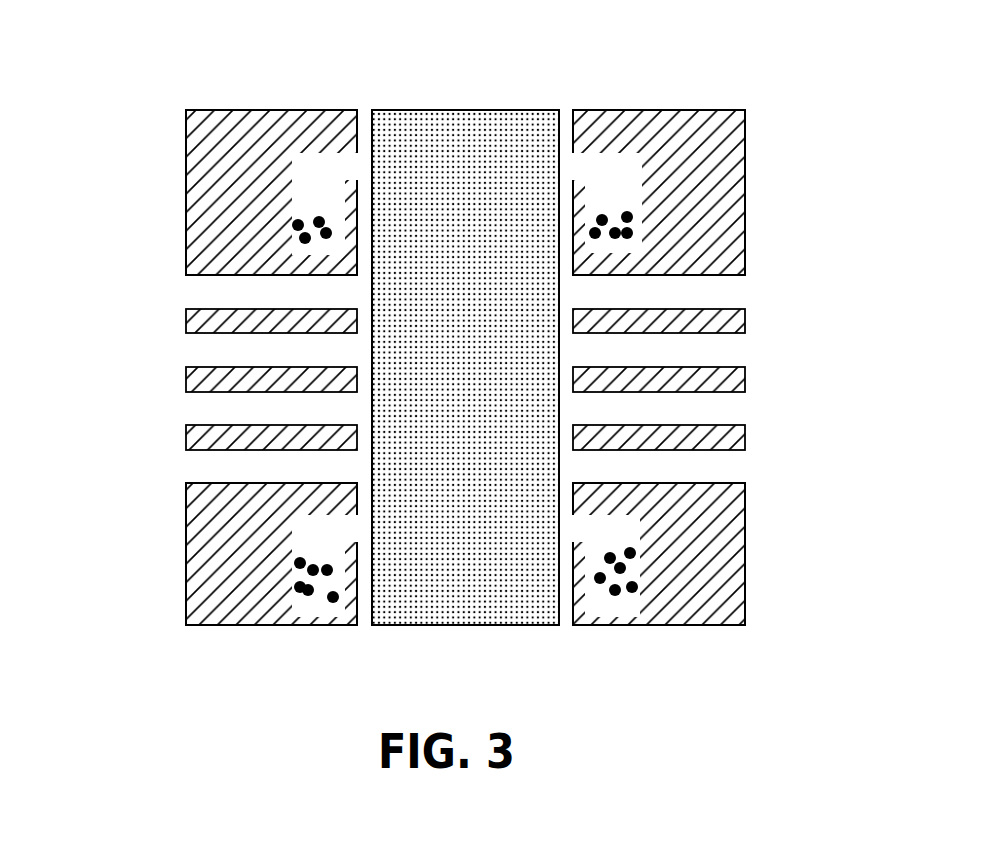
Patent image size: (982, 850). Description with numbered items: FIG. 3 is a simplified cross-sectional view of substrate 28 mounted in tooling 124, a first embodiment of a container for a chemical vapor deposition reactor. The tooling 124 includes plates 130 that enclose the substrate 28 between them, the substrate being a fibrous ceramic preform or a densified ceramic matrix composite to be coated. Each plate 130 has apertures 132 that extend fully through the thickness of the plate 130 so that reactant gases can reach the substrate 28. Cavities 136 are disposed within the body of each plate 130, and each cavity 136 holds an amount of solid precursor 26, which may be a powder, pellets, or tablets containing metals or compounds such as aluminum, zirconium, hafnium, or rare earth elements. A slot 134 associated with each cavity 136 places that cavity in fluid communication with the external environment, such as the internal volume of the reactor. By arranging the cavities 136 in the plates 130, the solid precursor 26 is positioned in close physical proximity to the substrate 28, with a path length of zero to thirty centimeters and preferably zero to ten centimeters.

The tooling 124 is at (447, 365).
The plate 130 is at (185, 250).
The aperture 132 is at (193, 407).
The slot 134 is at (348, 167).
The cavity 136 is at (297, 196).
The solid precursor 26 is at (333, 603).
The substrate 28 is at (453, 304).